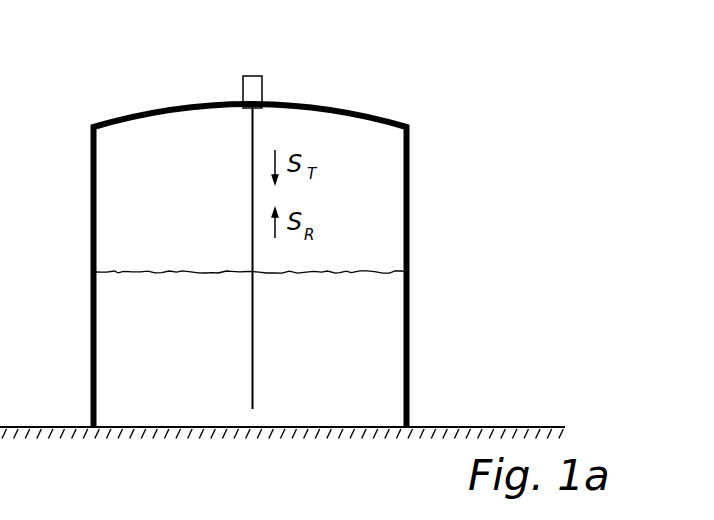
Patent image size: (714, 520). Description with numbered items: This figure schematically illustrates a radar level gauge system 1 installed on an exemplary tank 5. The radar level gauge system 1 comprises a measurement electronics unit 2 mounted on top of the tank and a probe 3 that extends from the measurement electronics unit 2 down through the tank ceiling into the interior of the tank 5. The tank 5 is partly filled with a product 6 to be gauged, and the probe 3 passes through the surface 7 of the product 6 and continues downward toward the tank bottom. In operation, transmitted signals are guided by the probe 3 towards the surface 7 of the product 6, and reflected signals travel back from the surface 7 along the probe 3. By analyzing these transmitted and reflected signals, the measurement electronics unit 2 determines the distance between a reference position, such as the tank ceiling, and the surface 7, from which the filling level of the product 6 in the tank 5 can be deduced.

The radar level gauge system 1 is at (253, 217).
The measurement electronics unit 2 is at (243, 86).
The probe 3 is at (253, 142).
The tank 5 is at (410, 158).
The product 6 is at (387, 338).
The surface 7 is at (385, 272).